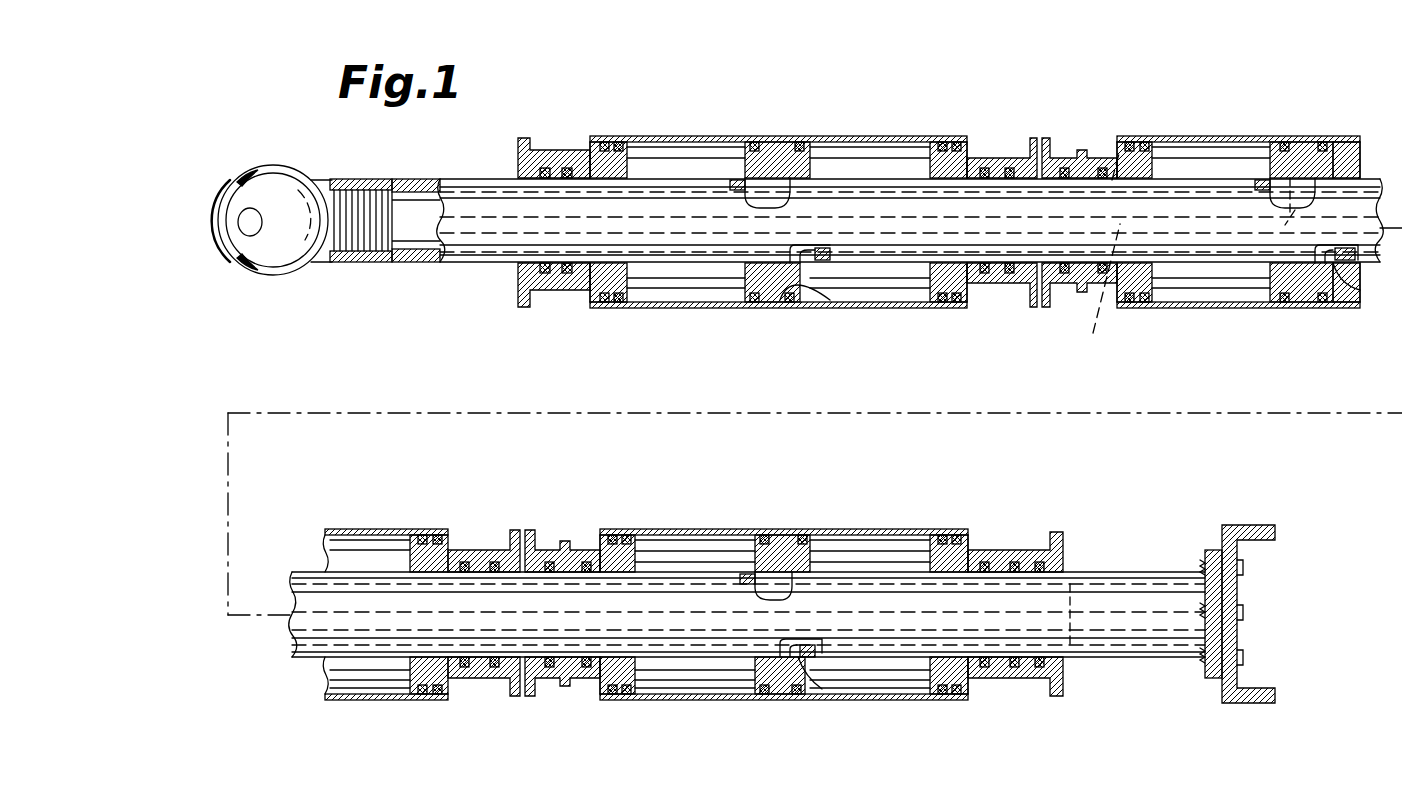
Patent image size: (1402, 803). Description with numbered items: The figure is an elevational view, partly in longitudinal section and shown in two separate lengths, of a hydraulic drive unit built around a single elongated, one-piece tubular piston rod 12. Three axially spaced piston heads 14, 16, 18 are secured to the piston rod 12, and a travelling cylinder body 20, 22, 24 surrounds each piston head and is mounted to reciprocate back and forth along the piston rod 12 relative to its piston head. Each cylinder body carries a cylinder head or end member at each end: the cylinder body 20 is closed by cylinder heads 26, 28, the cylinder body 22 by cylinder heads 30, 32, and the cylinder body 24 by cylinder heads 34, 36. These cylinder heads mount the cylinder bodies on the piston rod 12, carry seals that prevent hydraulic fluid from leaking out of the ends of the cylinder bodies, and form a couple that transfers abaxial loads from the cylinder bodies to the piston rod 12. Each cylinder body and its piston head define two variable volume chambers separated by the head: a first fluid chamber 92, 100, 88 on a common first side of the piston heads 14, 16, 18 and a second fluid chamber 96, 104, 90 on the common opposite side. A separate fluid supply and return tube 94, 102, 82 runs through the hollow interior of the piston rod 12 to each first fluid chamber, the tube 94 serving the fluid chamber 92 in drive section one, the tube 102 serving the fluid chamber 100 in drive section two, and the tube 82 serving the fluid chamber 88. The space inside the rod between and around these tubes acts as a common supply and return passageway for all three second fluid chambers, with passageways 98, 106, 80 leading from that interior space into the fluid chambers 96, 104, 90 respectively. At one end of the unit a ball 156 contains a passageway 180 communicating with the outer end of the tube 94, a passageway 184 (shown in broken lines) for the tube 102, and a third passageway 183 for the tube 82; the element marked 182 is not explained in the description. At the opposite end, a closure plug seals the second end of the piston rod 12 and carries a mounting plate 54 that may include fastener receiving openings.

The piston rod 12 is at (472, 177).
The piston head 14 is at (748, 297).
The piston head 16 is at (1274, 292).
The piston head 18 is at (762, 672).
The cylinder body 20 is at (820, 136).
The cylinder body 22 is at (1275, 136).
The cylinder body 24 is at (822, 529).
The cylinder head 26 is at (513, 297).
The cylinder head 28 is at (995, 156).
The cylinder head 30 is at (1097, 156).
The cylinder head 32 is at (470, 548).
The cylinder head 34 is at (568, 546).
The cylinder head 36 is at (1020, 535).
The mounting plate 54 is at (1214, 566).
The passageway 80 is at (828, 692).
The fluid supply and return tube 82 is at (752, 574).
The first fluid chamber 88 is at (705, 557).
The second fluid chamber 90 is at (900, 678).
The first fluid chamber 92 is at (663, 150).
The fluid supply and return tube 94 is at (406, 190).
The second fluid chamber 96 is at (886, 302).
The passageway 98 is at (818, 292).
The first fluid chamber 100 is at (1205, 150).
The fluid supply and return tube 102 is at (1095, 252).
The second fluid chamber 104 is at (368, 698).
The passageway 106 is at (1336, 264).
The ball 156 is at (309, 266).
The passageway 180 is at (219, 224).
The ball 182 is at (273, 219).
The passageway 183 is at (236, 176).
The passageway 184 is at (242, 268).